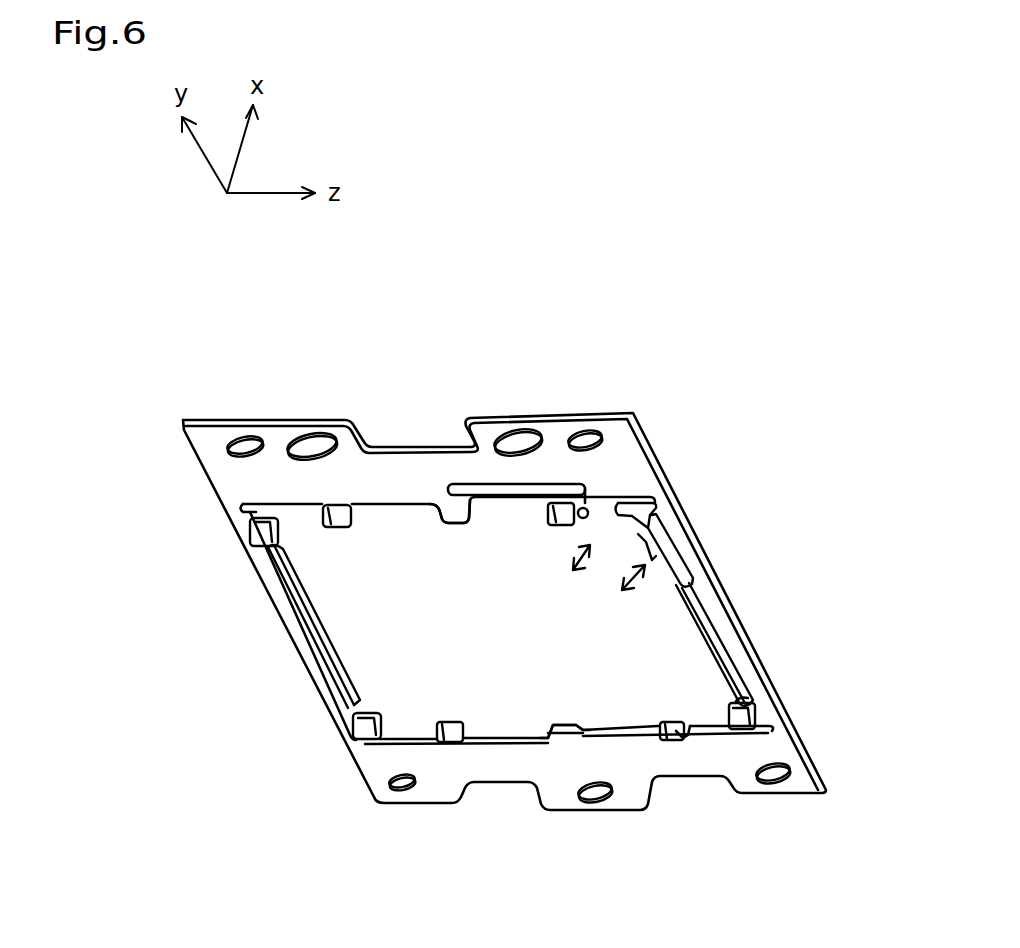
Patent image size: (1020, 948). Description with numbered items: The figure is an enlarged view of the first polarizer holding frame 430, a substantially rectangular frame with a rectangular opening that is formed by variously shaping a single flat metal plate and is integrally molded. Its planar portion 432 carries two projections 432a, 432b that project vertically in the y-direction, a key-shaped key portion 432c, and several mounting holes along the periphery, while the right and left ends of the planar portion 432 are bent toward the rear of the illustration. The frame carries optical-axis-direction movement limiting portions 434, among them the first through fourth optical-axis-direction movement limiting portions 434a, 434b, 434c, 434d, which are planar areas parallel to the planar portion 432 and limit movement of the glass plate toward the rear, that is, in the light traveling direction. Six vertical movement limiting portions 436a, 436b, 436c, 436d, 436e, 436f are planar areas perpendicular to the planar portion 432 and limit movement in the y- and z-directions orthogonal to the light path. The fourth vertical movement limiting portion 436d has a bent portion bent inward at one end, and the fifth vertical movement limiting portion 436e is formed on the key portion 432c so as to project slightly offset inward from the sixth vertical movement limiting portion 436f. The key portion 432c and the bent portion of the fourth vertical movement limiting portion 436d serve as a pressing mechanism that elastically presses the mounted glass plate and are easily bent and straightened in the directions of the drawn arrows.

The first polarizer holding frame 430 is at (655, 325).
The planar portion 432 is at (623, 477).
The projection 432a is at (437, 508).
The projection 432b is at (568, 724).
The key portion 432c is at (557, 500).
The optical-axis-direction movement limiting portion 434 is at (583, 517).
The first optical-axis-direction movement limiting portion 434a is at (260, 533).
The second optical-axis-direction movement limiting portion 434b is at (360, 727).
The third optical-axis-direction movement limiting portion 434c is at (740, 714).
The fourth optical-axis-direction movement limiting portion 434d is at (640, 525).
The first vertical movement limiting portion 436a is at (323, 643).
The second vertical movement limiting portion 436b is at (440, 728).
The third vertical movement limiting portion 436c is at (670, 725).
The fourth vertical movement limiting portion 436d is at (697, 633).
The fifth vertical movement limiting portion 436e is at (550, 513).
The sixth vertical movement limiting portion 436f is at (337, 530).